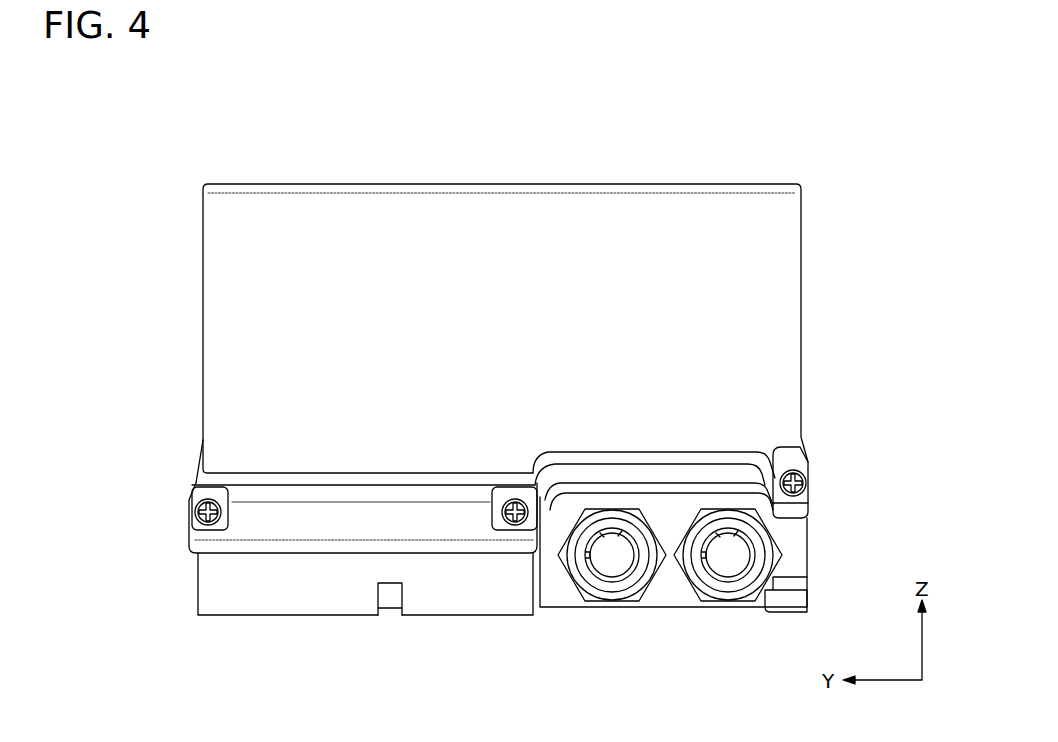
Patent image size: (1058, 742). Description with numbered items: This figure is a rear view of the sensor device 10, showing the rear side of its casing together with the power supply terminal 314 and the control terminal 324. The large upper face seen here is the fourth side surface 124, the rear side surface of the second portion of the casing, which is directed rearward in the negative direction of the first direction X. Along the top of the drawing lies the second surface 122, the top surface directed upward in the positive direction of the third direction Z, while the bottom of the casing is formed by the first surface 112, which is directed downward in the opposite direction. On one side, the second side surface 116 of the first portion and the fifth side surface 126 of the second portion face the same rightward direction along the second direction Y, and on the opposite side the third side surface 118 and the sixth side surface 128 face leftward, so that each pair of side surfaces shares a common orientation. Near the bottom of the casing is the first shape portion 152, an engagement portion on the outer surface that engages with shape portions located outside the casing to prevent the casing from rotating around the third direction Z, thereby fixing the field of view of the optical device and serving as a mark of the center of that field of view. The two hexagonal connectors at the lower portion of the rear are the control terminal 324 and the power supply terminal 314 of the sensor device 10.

The sensor device 10 is at (805, 85).
The first surface 112 is at (288, 617).
The second side surface 116 is at (290, 457).
The third side surface 118 is at (863, 440).
The second surface 122 is at (491, 185).
The fourth side surface 124 is at (720, 303).
The fifth side surface 126 is at (202, 395).
The sixth side surface 128 is at (805, 396).
The first shape portion 152 is at (390, 617).
The power supply terminal 314 is at (735, 593).
The control terminal 324 is at (615, 593).